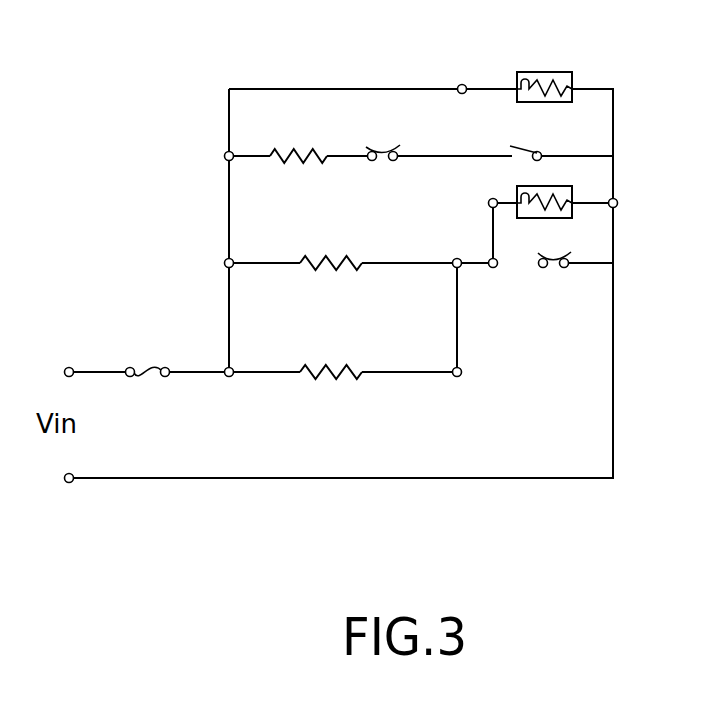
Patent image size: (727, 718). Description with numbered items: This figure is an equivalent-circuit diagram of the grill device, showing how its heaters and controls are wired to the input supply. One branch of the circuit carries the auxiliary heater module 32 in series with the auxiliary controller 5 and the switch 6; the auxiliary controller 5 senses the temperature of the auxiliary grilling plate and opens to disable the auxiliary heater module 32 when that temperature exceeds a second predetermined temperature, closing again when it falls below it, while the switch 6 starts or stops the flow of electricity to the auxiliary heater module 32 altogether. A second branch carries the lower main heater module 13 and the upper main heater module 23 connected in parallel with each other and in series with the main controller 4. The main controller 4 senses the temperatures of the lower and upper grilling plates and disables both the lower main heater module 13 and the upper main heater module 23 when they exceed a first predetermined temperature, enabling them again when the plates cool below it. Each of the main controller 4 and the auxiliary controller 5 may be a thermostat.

The auxiliary heater module 32 is at (282, 150).
The auxiliary controller 5 is at (385, 134).
The switch 6 is at (540, 138).
The main controller 4 is at (560, 249).
The lower main heater module 13 is at (313, 257).
The upper main heater module 23 is at (334, 373).